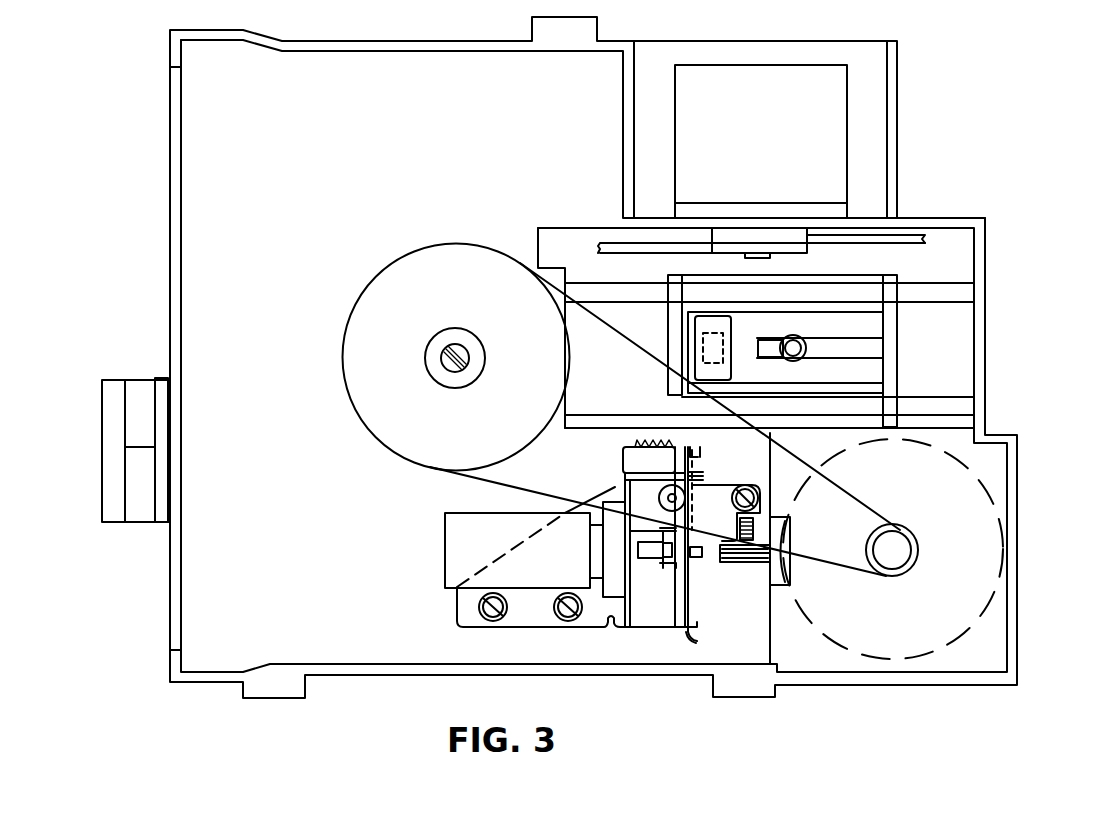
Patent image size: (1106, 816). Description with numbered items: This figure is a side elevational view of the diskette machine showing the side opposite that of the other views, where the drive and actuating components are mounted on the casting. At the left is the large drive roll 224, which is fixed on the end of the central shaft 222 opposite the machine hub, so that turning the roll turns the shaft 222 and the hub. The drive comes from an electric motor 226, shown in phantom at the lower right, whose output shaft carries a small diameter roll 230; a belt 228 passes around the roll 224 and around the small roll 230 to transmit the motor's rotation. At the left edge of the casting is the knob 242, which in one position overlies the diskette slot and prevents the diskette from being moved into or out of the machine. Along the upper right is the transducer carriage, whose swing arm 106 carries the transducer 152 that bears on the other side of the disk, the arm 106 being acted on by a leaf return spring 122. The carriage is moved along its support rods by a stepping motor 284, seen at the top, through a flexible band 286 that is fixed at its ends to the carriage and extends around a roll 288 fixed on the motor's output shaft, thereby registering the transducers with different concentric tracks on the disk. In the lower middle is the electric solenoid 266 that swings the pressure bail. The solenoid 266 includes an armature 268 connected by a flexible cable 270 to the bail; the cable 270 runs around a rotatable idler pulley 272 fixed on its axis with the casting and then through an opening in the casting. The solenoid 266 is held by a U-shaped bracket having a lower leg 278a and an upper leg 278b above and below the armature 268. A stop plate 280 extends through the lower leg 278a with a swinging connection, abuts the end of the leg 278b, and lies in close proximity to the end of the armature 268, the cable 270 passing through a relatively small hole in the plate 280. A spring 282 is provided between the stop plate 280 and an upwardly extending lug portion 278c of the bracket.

The swing arm 106 is at (870, 323).
The leaf return spring 122 is at (870, 347).
The transducer 152 is at (690, 338).
The central shaft 222 is at (486, 357).
The drive roll 224 is at (475, 288).
The electric motor 226 is at (1000, 493).
The belt 228 is at (863, 503).
The small diameter roll 230 is at (892, 583).
The knob 242 is at (134, 522).
The electric solenoid 266 is at (445, 552).
The armature 268 is at (655, 550).
The flexible cable 270 is at (712, 562).
The idler pulley 272 is at (760, 565).
The lower bracket leg 278a is at (657, 628).
The upper bracket leg 278b is at (622, 486).
The lug portion 278c is at (622, 464).
The stop plate 280 is at (697, 645).
The spring 282 is at (645, 440).
The motor 284 is at (784, 131).
The flexible band 286 is at (620, 243).
The roll 288 is at (788, 258).